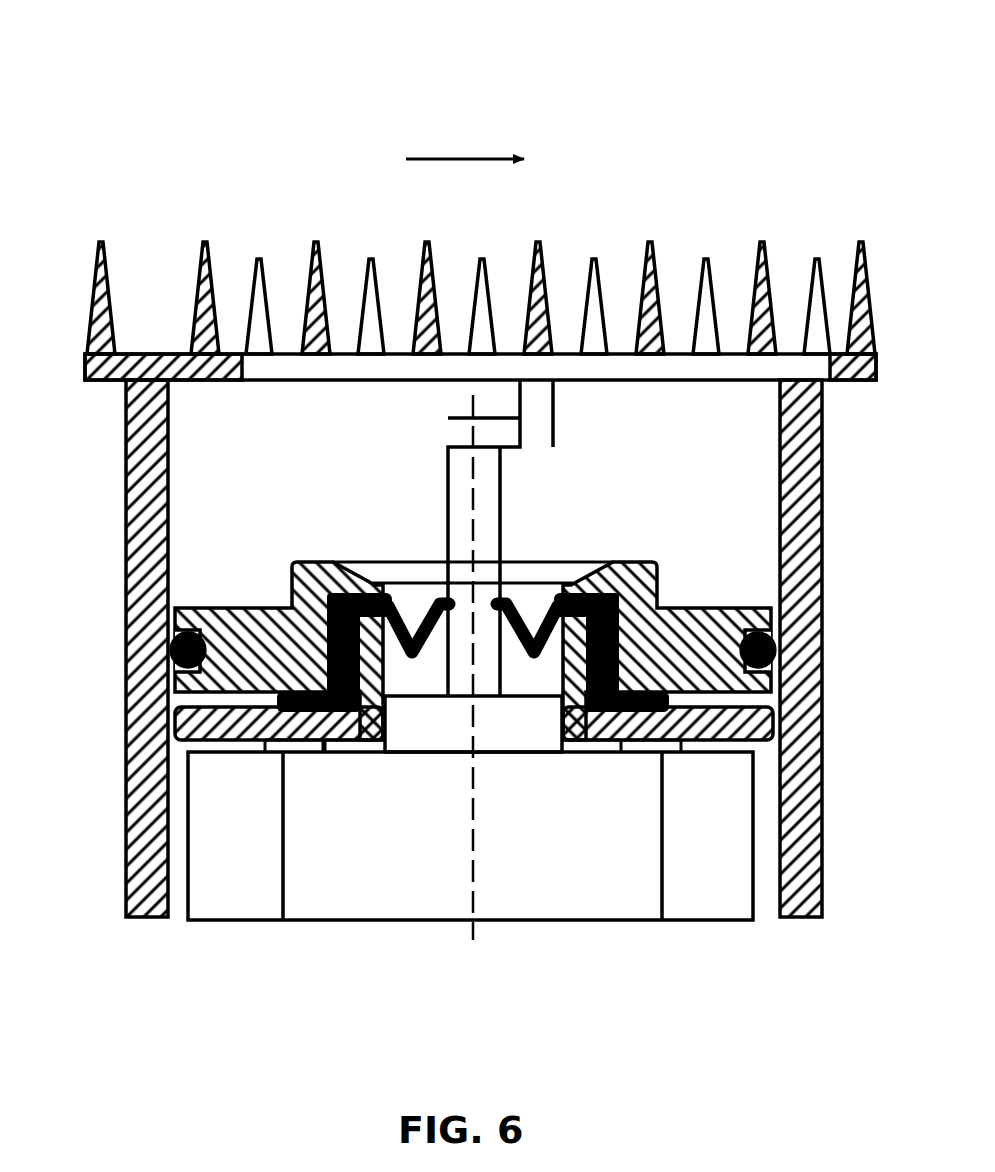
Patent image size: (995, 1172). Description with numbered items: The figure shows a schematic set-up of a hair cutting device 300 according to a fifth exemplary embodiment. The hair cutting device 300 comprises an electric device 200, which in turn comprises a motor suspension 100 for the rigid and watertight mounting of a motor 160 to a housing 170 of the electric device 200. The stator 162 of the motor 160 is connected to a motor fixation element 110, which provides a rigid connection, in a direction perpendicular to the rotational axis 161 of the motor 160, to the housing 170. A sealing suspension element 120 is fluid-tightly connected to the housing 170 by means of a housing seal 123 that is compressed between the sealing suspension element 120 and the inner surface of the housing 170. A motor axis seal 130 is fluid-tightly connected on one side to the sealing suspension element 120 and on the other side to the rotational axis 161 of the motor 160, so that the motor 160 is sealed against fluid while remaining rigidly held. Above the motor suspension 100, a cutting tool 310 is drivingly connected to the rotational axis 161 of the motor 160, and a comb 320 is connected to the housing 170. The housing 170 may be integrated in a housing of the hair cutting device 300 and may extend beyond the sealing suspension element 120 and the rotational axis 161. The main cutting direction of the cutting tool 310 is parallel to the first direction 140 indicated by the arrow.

The motor suspension 100 is at (442, 729).
The motor fixation element 110 is at (238, 732).
The sealing suspension element 120 is at (312, 575).
The housing seal 123 is at (197, 628).
The motor axis seal 130 is at (612, 655).
The first direction 140 is at (465, 141).
The motor 160 is at (430, 729).
The rotational axis 161 is at (502, 515).
The stator 162 is at (597, 887).
The housing 170 is at (143, 903).
The electric device 200 is at (422, 698).
The hair cutting device 300 is at (480, 194).
The cutting tool 310 is at (722, 268).
The comb 320 is at (150, 240).